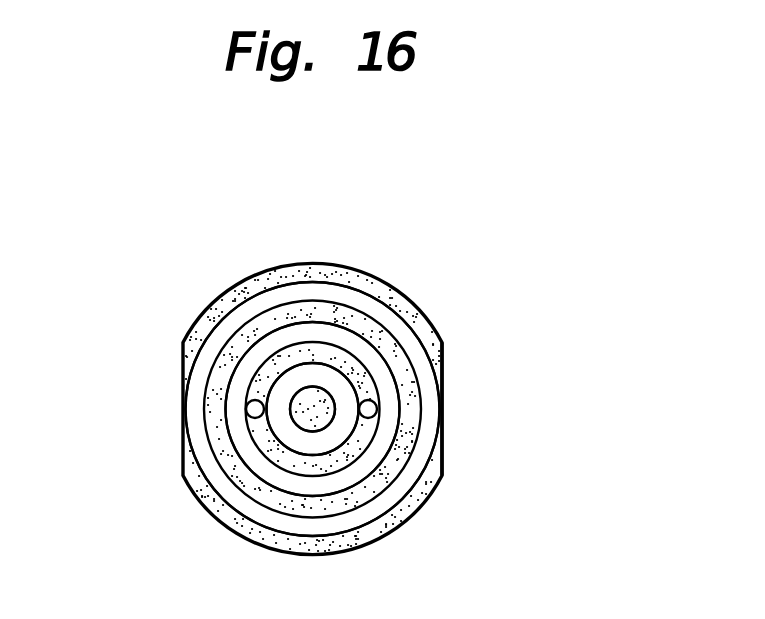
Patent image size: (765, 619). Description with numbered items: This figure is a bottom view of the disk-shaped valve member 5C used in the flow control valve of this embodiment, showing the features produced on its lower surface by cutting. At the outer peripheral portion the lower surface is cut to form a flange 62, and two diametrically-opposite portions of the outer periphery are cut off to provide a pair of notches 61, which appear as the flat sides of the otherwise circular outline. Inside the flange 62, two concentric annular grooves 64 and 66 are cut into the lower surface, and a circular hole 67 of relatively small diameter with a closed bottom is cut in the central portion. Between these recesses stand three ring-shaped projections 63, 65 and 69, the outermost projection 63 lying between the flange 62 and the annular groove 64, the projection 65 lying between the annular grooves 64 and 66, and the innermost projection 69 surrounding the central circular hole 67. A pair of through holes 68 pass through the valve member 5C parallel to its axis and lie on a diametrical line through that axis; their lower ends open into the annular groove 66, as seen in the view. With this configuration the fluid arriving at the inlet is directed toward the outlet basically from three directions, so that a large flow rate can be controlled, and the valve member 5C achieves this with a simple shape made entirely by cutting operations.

The notch 61 is at (460, 411).
The valve member 5C is at (444, 358).
The flange 62 is at (403, 291).
The ring-shaped projection 63 is at (322, 290).
The annular groove 64 is at (402, 453).
The ring-shaped projection 65 is at (357, 471).
The annular groove 66 is at (256, 373).
The circular hole 67 is at (296, 422).
The through hole 68 is at (246, 409).
The ring-shaped projection 69 is at (297, 376).